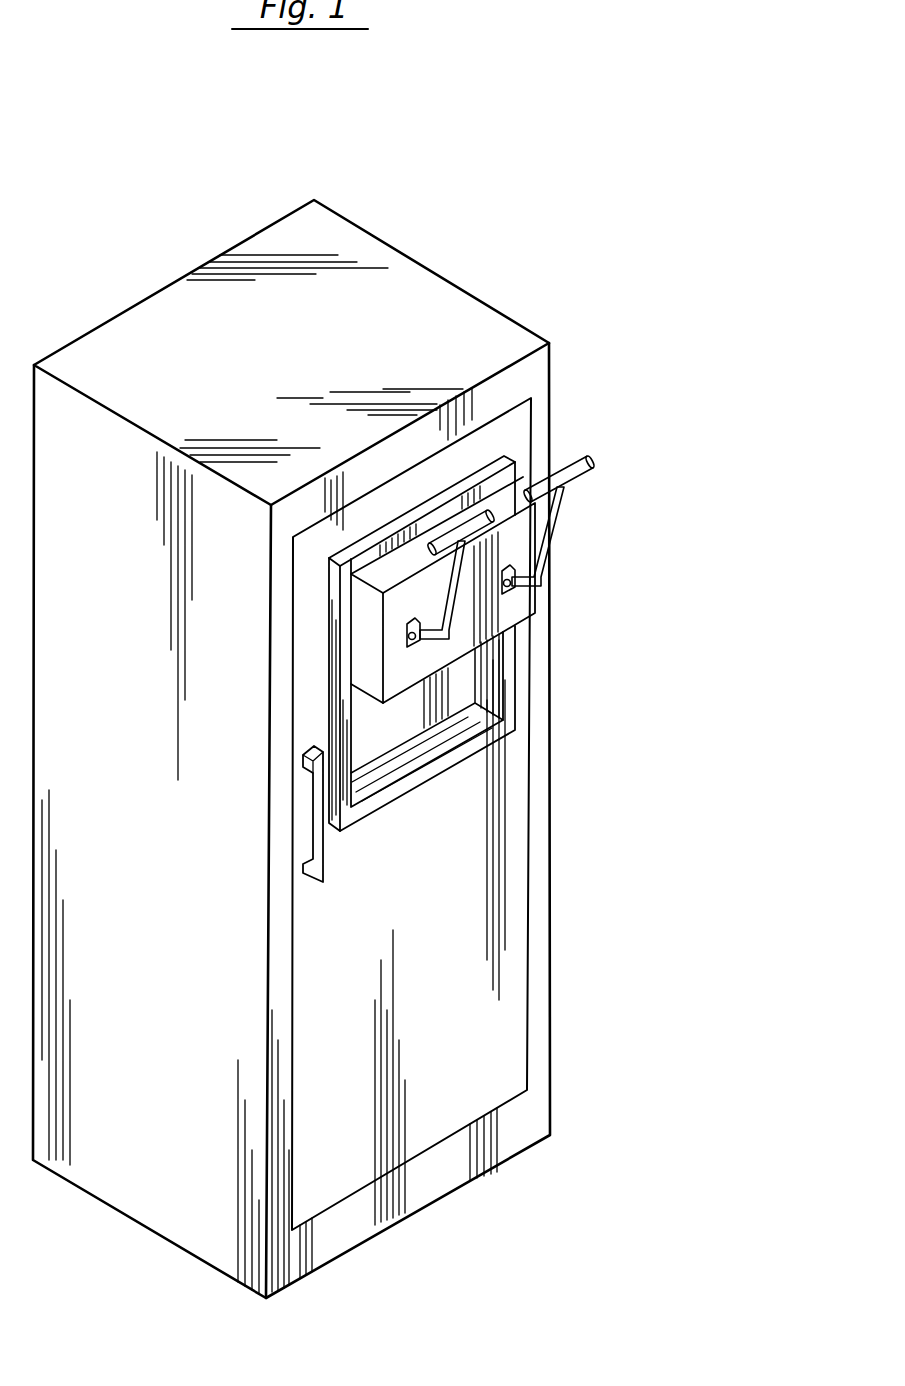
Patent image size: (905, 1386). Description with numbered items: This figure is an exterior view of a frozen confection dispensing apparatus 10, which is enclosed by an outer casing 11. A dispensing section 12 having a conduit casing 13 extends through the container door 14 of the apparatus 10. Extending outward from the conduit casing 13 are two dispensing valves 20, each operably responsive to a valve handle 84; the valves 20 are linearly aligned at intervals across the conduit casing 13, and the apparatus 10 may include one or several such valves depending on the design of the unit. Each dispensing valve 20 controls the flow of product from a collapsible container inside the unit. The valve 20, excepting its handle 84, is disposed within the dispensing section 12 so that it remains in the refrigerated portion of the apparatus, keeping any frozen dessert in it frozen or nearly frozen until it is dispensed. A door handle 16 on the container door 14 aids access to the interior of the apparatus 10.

The frozen confection dispensing apparatus 10 is at (478, 190).
The outer casing 11 is at (551, 818).
The dispensing section 12 is at (551, 609).
The conduit casing 13 is at (493, 488).
The container door 14 is at (409, 892).
The door handle 16 is at (313, 822).
The dispensing valve 20 is at (605, 445).
The valve handle 84 is at (450, 612).